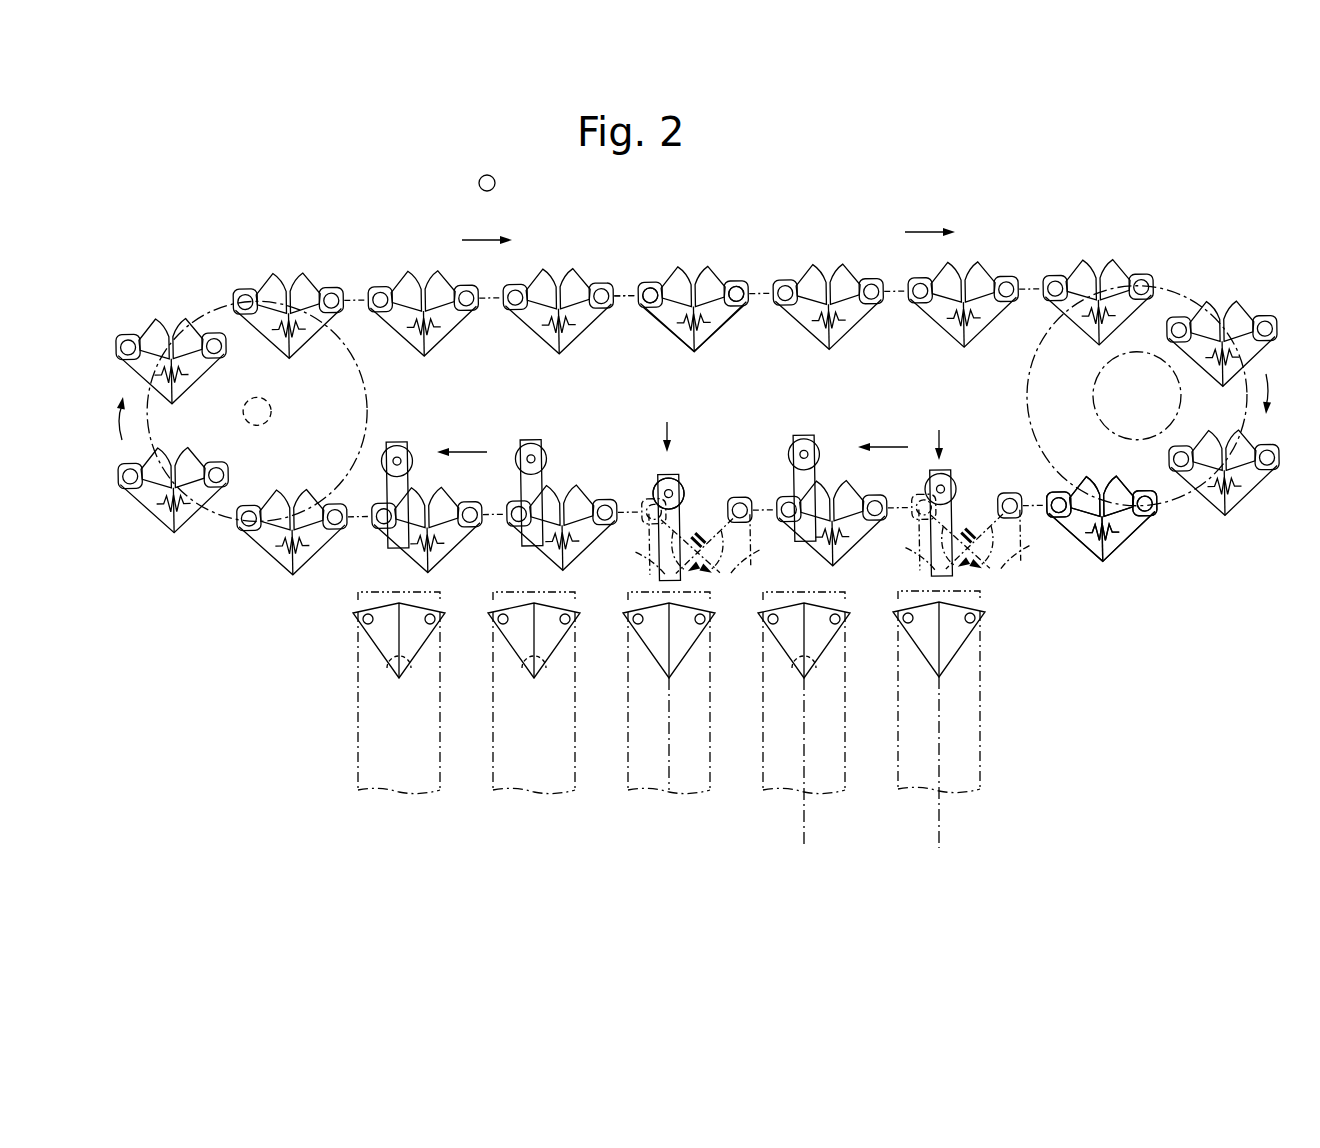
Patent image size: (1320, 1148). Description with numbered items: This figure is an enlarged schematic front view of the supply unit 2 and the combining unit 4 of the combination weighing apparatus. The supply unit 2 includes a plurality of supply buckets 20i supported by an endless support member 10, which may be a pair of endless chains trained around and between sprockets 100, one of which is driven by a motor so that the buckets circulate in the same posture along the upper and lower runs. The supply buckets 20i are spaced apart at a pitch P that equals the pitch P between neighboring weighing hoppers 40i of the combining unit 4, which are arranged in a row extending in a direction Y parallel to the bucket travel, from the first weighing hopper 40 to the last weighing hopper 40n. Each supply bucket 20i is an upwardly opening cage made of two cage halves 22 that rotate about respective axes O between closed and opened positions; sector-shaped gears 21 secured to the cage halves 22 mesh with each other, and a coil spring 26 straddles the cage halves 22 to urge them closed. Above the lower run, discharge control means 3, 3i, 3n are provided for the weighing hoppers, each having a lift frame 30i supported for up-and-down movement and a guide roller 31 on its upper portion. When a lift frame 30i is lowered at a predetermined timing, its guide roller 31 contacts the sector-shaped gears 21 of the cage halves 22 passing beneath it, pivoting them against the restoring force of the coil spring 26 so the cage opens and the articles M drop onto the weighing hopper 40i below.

The supply unit 2 is at (1030, 238).
The discharge control means 3 is at (394, 437).
The discharge control means 3i is at (701, 491).
The discharge control means 3n is at (945, 470).
The combining unit 4 is at (652, 719).
The endless support member 10 is at (624, 280).
The supply bucket 20i is at (695, 303).
The sector-shaped gear 21 is at (682, 268).
The cage half 22 is at (706, 338).
The coil spring 26 is at (275, 545).
The lift frame 30i is at (672, 474).
The guide roller 31 is at (676, 485).
The weighing hopper 40 is at (377, 630).
The weighing hopper 40i is at (680, 648).
The weighing hopper 40n is at (955, 643).
The sprocket 100 is at (1168, 503).
The axis O is at (653, 286).
The article M is at (542, 237).
The pitch P is at (420, 268).
The direction Y is at (716, 842).